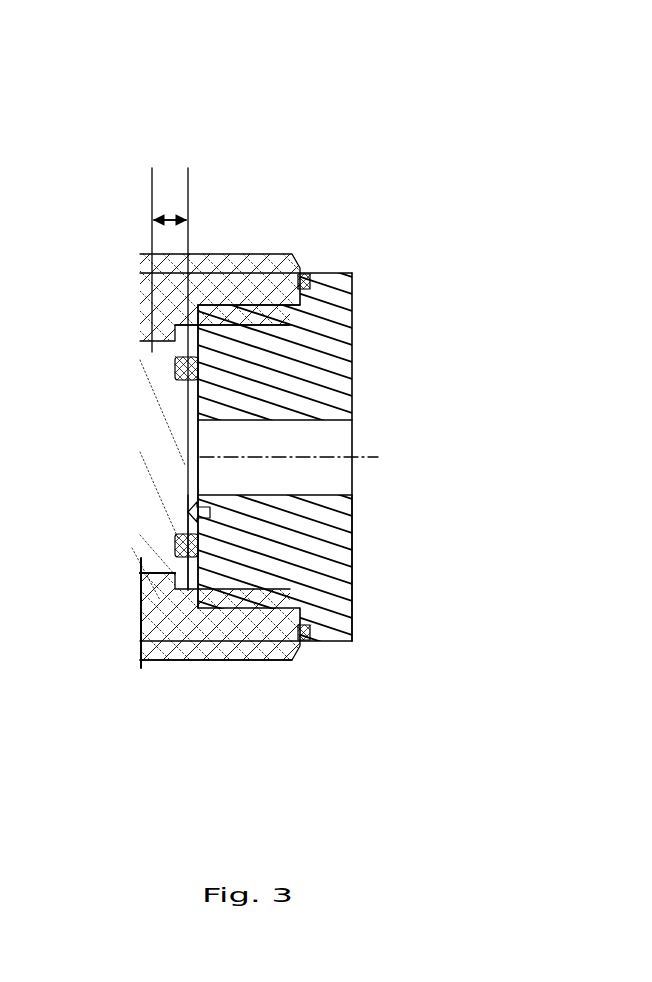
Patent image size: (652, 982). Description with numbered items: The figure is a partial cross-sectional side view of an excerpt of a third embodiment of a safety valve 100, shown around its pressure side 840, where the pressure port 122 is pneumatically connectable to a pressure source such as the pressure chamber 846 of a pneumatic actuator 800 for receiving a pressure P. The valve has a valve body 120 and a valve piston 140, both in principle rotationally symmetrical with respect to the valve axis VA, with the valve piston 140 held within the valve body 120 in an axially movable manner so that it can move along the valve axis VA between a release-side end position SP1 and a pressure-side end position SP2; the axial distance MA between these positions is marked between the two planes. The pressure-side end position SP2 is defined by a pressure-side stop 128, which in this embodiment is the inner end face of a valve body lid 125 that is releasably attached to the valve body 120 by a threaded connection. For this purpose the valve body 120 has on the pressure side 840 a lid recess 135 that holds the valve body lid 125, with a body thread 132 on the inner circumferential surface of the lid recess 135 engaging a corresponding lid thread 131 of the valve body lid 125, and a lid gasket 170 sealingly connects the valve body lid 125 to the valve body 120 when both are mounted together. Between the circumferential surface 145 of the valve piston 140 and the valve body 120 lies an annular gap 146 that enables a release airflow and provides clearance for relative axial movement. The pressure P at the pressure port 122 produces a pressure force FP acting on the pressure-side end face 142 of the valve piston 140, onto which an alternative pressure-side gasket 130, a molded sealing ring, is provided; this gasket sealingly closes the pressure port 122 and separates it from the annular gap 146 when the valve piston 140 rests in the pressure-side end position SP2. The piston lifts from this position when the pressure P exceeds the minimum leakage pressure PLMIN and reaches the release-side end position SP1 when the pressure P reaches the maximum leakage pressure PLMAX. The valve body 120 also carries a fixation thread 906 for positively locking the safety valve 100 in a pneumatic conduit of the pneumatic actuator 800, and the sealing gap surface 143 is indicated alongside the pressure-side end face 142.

The safety valve 100 is at (358, 30).
The valve body 120 is at (185, 630).
The pressure port 122 is at (412, 456).
The pressure P is at (412, 456).
The minimum leakage pressure PLMIN is at (412, 456).
The maximum leakage pressure PLMAX is at (342, 485).
The valve body lid 125 is at (343, 565).
The pressure-side stop 128 is at (196, 398).
The lid thread 131 is at (267, 247).
The body thread 132 is at (238, 303).
The lid recess 135 is at (235, 330).
The lid gasket 170 is at (303, 270).
The pressure-side gasket 130 is at (197, 560).
The valve piston 140 is at (141, 612).
The circumferential surface 145 is at (150, 577).
The annular gap 146 is at (162, 570).
The pressure force FP is at (204, 514).
The fixation thread 906 is at (262, 663).
The pressure-side end face 142 is at (257, 527).
The sealing gap surface 143 is at (190, 487).
The release-side end position SP1 is at (151, 183).
The pressure-side end position SP2 is at (189, 183).
The axial distance MA is at (178, 218).
The valve axis VA is at (363, 457).
The pressure side 840 is at (487, 392).
The pressure chamber 846 is at (487, 392).
The pneumatic actuator 800 is at (423, 410).